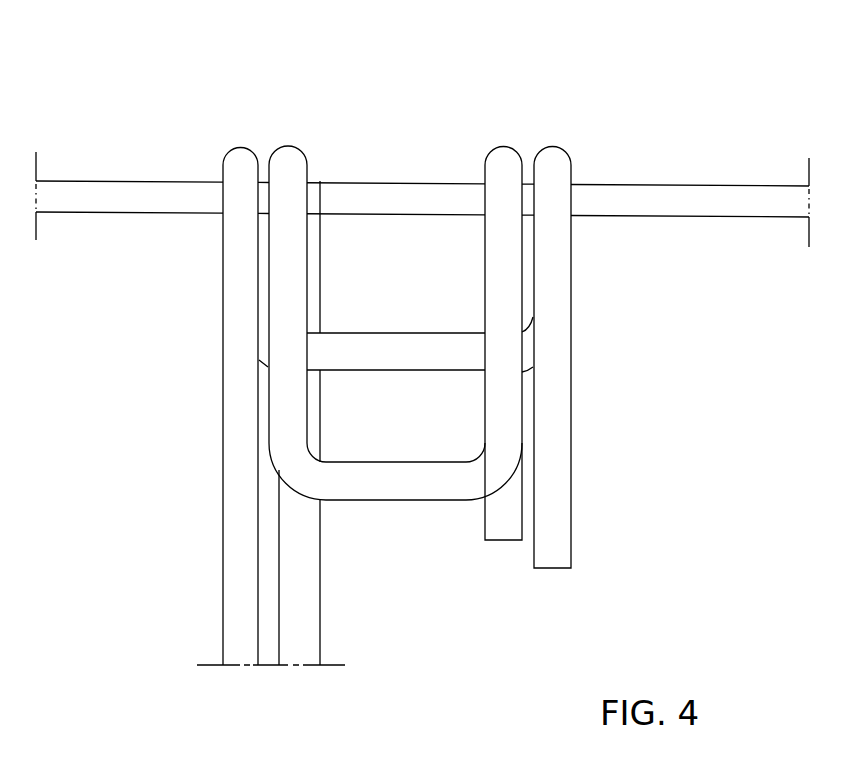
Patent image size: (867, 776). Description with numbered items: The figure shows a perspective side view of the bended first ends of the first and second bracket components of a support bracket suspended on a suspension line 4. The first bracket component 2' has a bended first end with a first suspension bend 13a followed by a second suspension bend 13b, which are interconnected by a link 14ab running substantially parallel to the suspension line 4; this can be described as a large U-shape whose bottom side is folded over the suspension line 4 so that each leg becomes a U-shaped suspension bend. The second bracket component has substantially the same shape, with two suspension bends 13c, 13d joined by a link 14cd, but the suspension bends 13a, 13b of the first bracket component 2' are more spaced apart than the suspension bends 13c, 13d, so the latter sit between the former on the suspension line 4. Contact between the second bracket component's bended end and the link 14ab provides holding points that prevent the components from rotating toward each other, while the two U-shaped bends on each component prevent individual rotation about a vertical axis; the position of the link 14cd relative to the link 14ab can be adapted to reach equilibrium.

The suspension line 4 is at (690, 183).
The first suspension bend 13a is at (568, 149).
The second suspension bend 13b is at (237, 149).
The suspension bend 13c is at (494, 149).
The suspension bend 13d is at (305, 150).
The link 14ab is at (397, 332).
The link 14cd is at (395, 500).
The first bracket component 2' is at (244, 423).